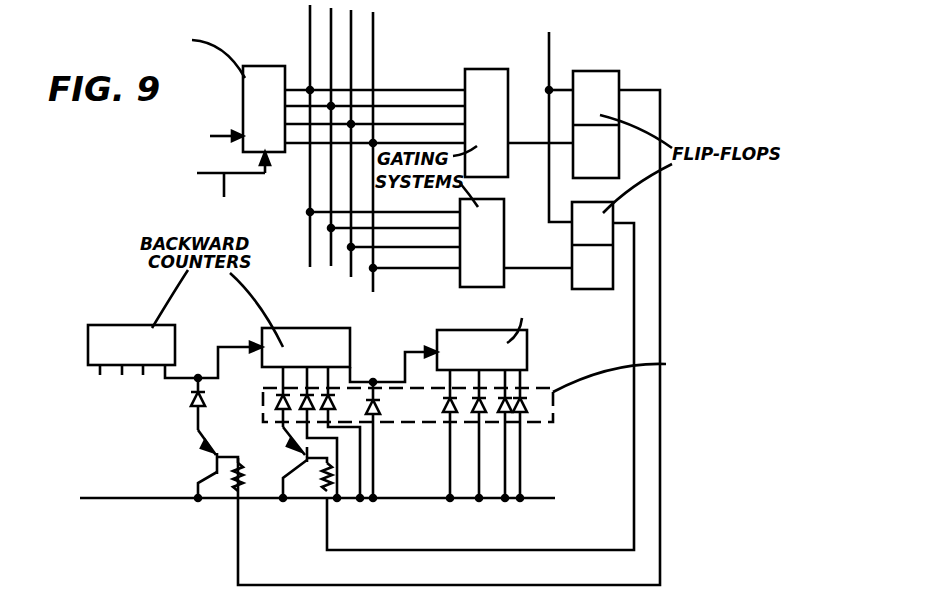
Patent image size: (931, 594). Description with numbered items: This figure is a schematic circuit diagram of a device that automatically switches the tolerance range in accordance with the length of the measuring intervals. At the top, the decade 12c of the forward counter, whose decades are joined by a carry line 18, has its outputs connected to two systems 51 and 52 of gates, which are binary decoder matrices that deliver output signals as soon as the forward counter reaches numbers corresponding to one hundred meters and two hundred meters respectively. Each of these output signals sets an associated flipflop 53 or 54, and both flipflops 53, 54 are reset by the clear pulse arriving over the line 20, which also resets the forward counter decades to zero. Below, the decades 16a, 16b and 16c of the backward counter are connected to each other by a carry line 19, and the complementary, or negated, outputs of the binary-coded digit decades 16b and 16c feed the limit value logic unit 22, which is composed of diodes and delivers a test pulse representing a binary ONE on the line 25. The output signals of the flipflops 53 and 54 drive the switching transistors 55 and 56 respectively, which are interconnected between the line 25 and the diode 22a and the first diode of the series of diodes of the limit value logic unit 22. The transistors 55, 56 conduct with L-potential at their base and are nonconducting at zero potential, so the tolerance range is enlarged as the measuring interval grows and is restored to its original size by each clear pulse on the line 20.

The decade of the forward counter 12c is at (261, 82).
The carry line 18 is at (213, 136).
The line 20 is at (577, 33).
The system of gates 51 is at (488, 80).
The system of gates 52 is at (498, 227).
The flipflop 53 is at (608, 88).
The flipflop 54 is at (595, 280).
The decade of the backward counter 16a is at (117, 337).
The decade of the backward counter 16b is at (290, 340).
The decade of the backward counter 16c is at (519, 350).
The carry line 19 is at (218, 348).
The diode 22a is at (192, 409).
The limit value logic unit 22 is at (553, 400).
The line 25 is at (110, 500).
The switching transistor 55 is at (227, 460).
The switching transistor 56 is at (315, 460).